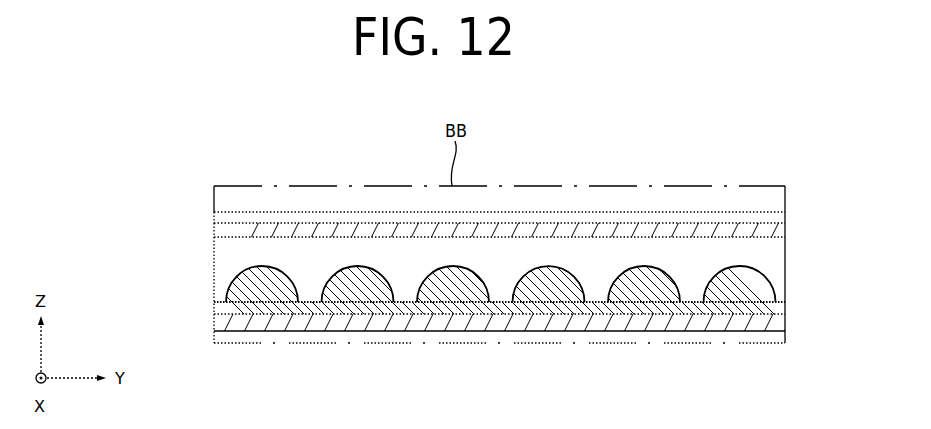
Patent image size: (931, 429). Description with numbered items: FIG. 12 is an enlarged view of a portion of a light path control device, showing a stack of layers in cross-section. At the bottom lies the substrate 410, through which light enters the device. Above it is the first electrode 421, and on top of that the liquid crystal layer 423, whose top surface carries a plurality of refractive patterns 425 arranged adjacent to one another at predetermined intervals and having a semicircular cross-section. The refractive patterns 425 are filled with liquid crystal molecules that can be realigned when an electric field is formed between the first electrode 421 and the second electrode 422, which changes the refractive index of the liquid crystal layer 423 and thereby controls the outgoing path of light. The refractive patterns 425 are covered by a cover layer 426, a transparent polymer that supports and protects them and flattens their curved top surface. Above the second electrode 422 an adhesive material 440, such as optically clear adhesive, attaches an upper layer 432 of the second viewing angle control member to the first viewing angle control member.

The cover substrate 432 is at (763, 200).
The adhesive material 440 is at (216, 217).
The second electrode 422 is at (763, 232).
The cover layer 426 is at (214, 265).
The refractive patterns 425 is at (768, 274).
The liquid crystal layer 423 is at (765, 309).
The first electrode 421 is at (218, 322).
The substrate 410 is at (765, 337).